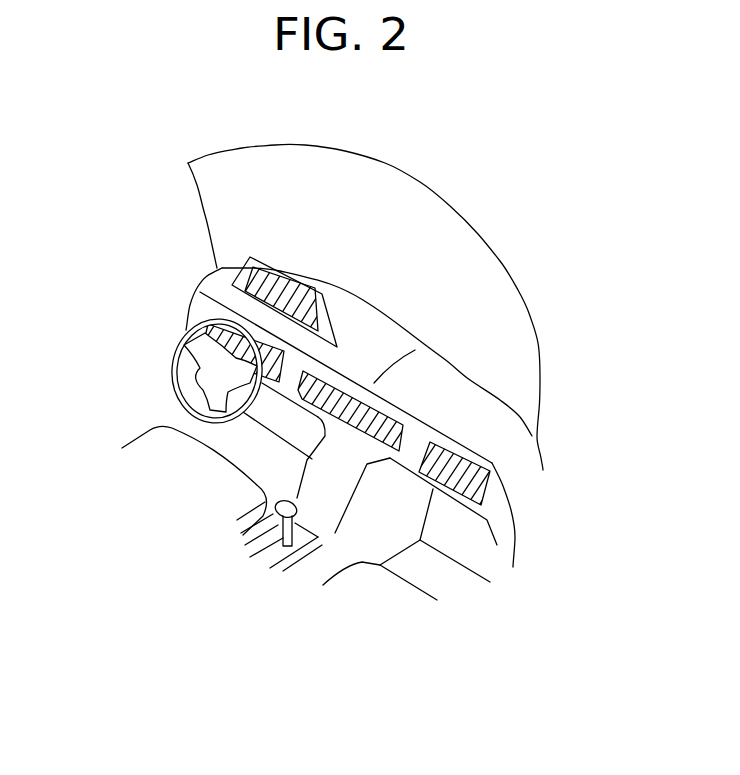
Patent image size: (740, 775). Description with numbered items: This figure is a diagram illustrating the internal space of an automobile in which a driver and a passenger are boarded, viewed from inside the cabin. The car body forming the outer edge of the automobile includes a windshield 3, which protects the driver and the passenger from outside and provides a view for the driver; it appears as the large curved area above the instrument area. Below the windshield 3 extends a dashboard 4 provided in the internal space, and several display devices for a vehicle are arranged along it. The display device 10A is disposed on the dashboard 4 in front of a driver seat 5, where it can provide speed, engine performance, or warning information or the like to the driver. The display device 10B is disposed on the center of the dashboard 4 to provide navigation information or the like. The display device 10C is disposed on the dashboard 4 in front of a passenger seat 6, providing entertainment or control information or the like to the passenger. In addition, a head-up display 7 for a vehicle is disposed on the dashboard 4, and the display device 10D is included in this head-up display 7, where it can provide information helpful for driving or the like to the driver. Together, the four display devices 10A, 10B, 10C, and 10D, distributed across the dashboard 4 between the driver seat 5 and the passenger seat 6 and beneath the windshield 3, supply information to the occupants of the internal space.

The windshield 3 is at (215, 195).
The head-up display 7 is at (233, 276).
The display device 10A is at (214, 338).
The display device 10B is at (360, 410).
The display device 10C is at (453, 468).
The display device 10D is at (278, 285).
The driver seat 5 is at (131, 419).
The dashboard 4 is at (343, 458).
The passenger seat 6 is at (353, 589).